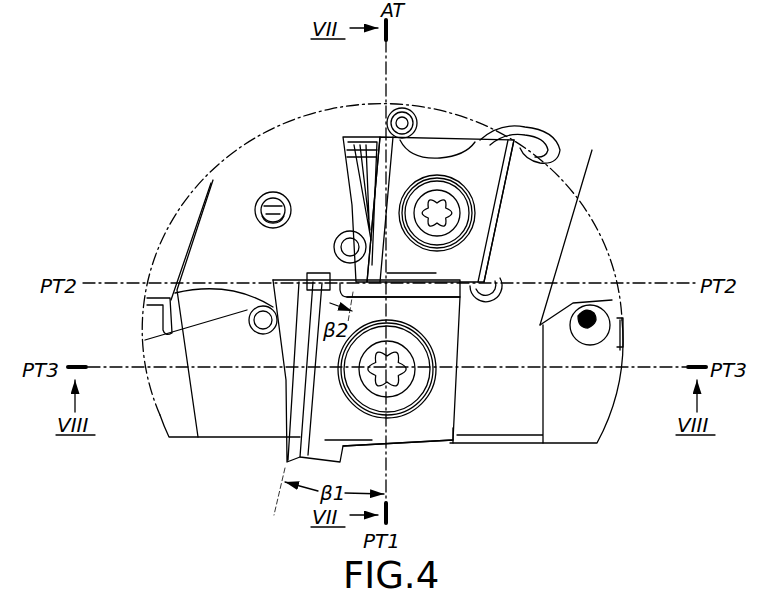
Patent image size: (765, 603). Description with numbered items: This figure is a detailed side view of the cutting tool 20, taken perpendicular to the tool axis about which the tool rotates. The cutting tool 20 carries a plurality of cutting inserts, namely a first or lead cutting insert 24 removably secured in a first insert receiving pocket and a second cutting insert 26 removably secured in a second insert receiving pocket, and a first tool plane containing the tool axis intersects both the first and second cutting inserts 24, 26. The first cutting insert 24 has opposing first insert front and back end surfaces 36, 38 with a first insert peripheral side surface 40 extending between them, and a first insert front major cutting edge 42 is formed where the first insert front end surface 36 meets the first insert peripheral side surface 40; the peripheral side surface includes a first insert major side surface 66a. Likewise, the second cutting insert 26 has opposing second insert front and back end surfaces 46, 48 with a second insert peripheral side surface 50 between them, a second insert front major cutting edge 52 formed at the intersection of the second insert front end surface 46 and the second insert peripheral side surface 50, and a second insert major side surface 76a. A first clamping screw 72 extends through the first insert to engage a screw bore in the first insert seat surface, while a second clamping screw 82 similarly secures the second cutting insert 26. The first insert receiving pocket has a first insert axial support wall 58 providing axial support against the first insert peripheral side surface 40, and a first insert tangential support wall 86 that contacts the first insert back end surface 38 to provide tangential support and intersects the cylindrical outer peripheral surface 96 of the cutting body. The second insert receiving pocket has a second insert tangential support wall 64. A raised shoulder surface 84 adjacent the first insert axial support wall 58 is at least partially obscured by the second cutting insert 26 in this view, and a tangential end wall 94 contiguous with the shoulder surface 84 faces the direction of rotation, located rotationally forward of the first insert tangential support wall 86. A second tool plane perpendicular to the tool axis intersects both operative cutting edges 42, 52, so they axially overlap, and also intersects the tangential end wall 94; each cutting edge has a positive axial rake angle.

The cutting tool 20 is at (186, 207).
The first cutting insert 24 is at (436, 453).
The second cutting insert 26 is at (470, 157).
The first insert front end surface 36 is at (295, 327).
The first insert back end surface 38 is at (458, 414).
The first insert peripheral side surface 40 is at (318, 420).
The first insert front major cutting edge 42 is at (290, 418).
The second insert front end surface 46 is at (347, 172).
The second insert back end surface 48 is at (507, 200).
The second insert peripheral side surface 50 is at (468, 253).
The second insert front major cutting edge 52 is at (362, 230).
The first insert axial support wall 58 is at (398, 306).
The second insert tangential support wall 64 is at (503, 182).
The first insert major side surface 66a is at (348, 429).
The first clamping screw 72 is at (397, 376).
The second insert major side surface 76a is at (411, 262).
The second clamping screw 82 is at (457, 215).
The raised shoulder surface 84 is at (357, 278).
The first insert tangential support wall 86 is at (430, 446).
The tangential end wall 94 is at (272, 280).
The cylindrical outer peripheral surface 96 is at (528, 420).